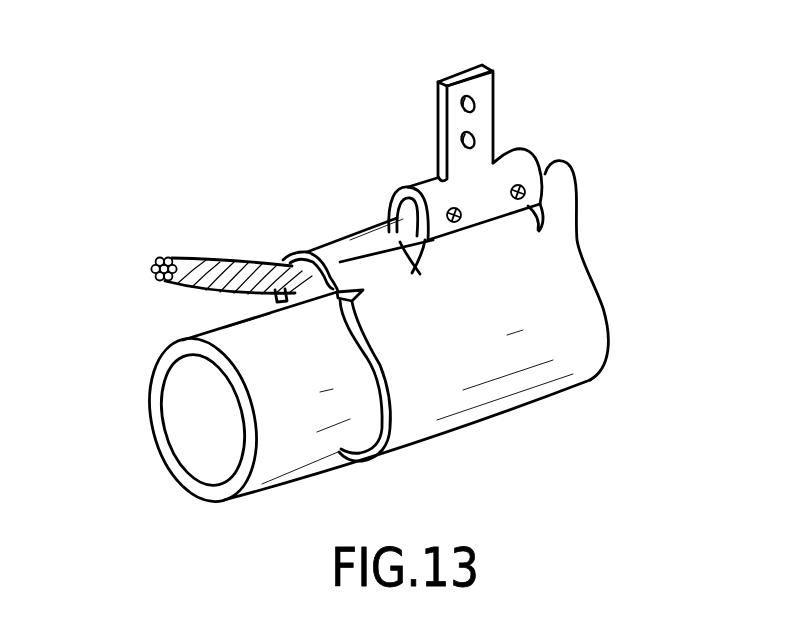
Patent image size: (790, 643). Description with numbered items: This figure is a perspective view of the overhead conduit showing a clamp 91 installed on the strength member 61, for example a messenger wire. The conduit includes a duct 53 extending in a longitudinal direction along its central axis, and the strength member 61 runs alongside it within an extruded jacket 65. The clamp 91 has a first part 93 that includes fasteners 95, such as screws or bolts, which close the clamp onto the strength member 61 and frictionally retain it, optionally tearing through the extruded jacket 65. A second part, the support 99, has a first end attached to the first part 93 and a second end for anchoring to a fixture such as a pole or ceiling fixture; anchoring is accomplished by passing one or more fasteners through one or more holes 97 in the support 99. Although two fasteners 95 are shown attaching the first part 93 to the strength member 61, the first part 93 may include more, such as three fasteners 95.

The duct 53 is at (155, 400).
The strength member 61 is at (151, 258).
The extruded jacket 65 is at (584, 293).
The clamp 91 is at (421, 146).
The first part 93 is at (497, 209).
The fasteners 95 is at (457, 222).
The holes 97 is at (477, 135).
The support 99 is at (480, 82).